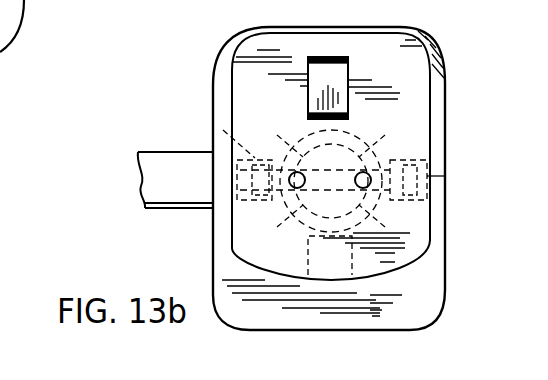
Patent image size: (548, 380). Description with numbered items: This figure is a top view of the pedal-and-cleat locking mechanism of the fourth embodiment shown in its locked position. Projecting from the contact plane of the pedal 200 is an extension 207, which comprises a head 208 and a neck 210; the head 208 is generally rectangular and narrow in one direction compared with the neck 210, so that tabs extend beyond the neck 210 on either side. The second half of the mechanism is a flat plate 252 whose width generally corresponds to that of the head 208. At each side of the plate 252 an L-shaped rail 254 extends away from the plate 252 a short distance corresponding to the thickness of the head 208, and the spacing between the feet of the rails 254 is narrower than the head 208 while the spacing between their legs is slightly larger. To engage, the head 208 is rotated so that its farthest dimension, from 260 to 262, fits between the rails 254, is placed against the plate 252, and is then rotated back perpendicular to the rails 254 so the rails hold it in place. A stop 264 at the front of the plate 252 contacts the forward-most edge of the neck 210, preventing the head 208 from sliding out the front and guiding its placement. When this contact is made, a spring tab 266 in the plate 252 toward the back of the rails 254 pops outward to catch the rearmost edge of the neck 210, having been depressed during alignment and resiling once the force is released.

The pedal 200 is at (437, 55).
The flat plate 252 is at (233, 66).
The rail 254 is at (214, 126).
The head corner point 260 is at (257, 200).
The head corner point 262 is at (446, 176).
The stop 264 is at (348, 258).
The spring tab 266 is at (331, 80).
The extension 207 is at (368, 164).
The head 208 is at (296, 164).
The neck 210 is at (294, 228).